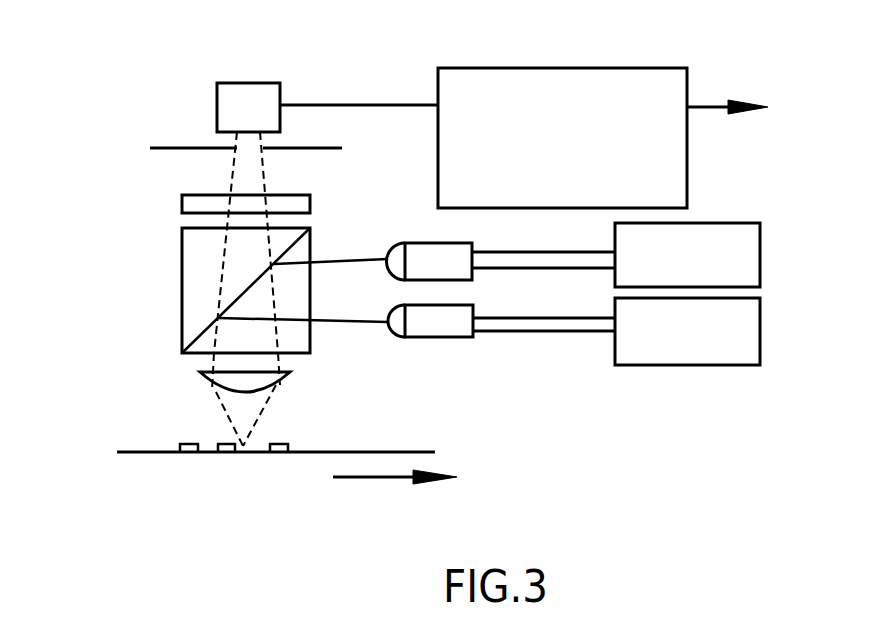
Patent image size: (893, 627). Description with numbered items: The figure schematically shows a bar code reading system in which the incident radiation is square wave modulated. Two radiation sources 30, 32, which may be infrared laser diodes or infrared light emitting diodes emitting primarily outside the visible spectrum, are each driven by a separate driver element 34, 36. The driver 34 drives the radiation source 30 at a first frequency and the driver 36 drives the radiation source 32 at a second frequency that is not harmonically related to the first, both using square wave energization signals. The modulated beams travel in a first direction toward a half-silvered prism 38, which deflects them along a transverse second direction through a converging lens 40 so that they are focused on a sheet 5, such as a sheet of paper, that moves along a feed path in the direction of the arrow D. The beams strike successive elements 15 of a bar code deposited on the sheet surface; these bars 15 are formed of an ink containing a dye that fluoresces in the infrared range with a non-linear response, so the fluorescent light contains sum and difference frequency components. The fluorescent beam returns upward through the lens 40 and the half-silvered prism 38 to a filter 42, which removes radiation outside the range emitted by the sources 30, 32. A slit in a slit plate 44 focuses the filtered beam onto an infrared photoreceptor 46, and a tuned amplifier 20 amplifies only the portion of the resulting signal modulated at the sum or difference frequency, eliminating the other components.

The sheet 5 is at (160, 450).
The elements of a bar code 15 is at (273, 455).
The tuned amplifier 20 is at (585, 77).
The radiation source 30 is at (438, 243).
The radiation source 32 is at (451, 338).
The driver element 34 is at (760, 250).
The driver element 36 is at (688, 352).
The half-silvered prism 38 is at (182, 302).
The converging lens 40 is at (280, 377).
The filter 42 is at (182, 203).
The slit plate 44 is at (159, 147).
The infrared photoreceptor 46 is at (217, 100).
The direction of the arrow D is at (368, 478).